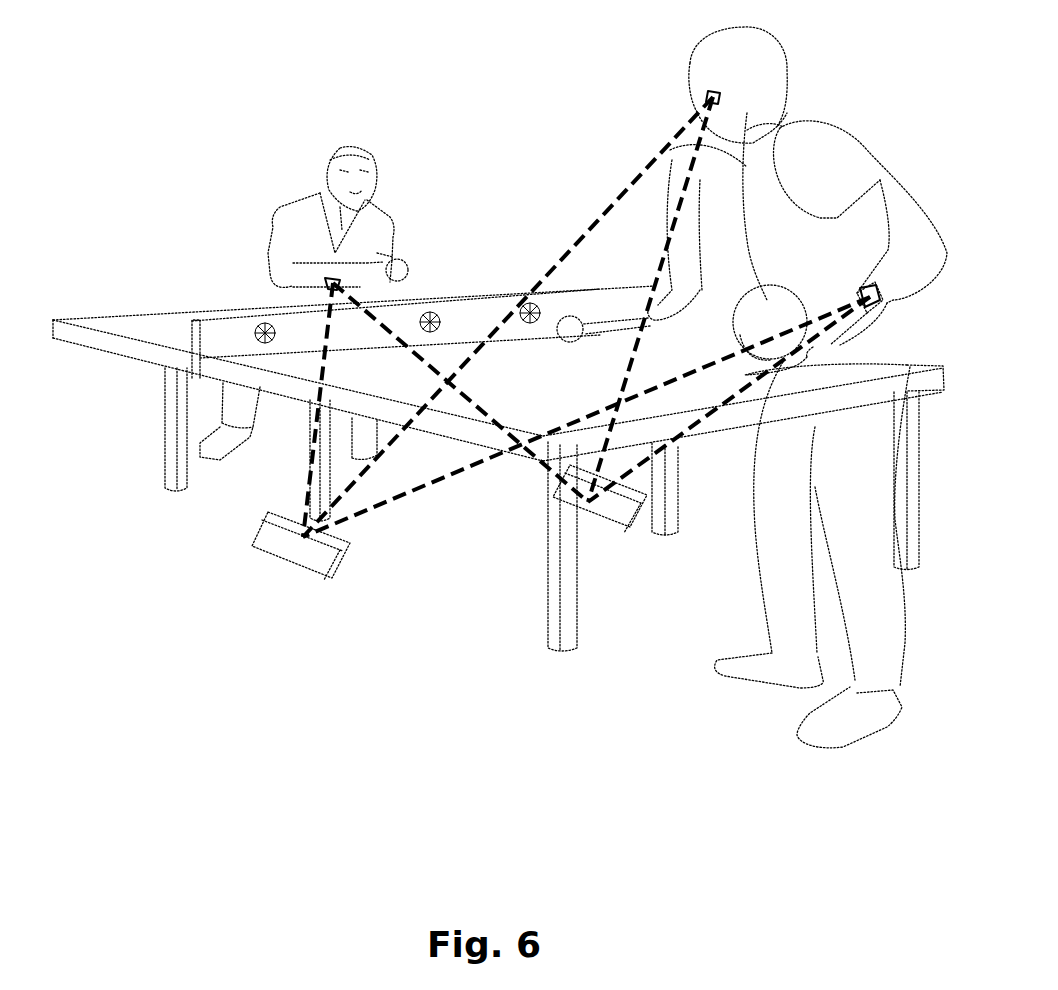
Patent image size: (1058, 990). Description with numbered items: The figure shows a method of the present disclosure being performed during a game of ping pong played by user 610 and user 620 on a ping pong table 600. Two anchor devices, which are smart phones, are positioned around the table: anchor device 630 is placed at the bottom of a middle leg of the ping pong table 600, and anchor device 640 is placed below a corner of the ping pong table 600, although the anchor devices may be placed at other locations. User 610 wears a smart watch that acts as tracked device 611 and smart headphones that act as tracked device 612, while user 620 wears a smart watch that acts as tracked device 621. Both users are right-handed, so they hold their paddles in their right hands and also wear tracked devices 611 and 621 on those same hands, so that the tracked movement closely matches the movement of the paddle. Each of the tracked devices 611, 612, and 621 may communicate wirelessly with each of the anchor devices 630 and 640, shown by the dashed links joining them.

The ping pong table 600 is at (465, 300).
The user 610 is at (740, 214).
The tracked device 611 is at (852, 292).
The tracked device 612 is at (735, 98).
The user 620 is at (270, 250).
The tracked device 621 is at (328, 291).
The anchor device 630 is at (313, 570).
The anchor device 640 is at (600, 518).